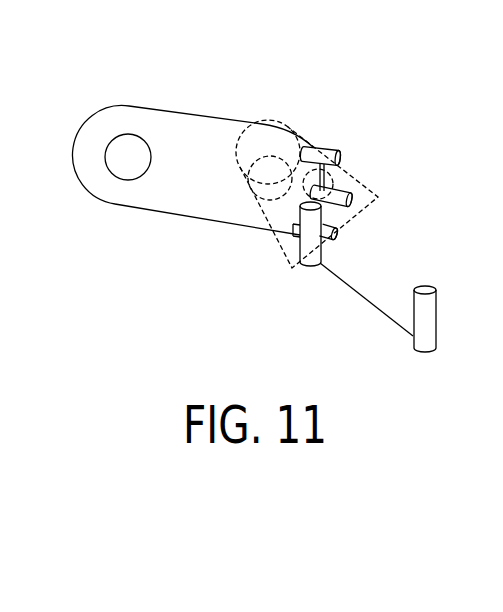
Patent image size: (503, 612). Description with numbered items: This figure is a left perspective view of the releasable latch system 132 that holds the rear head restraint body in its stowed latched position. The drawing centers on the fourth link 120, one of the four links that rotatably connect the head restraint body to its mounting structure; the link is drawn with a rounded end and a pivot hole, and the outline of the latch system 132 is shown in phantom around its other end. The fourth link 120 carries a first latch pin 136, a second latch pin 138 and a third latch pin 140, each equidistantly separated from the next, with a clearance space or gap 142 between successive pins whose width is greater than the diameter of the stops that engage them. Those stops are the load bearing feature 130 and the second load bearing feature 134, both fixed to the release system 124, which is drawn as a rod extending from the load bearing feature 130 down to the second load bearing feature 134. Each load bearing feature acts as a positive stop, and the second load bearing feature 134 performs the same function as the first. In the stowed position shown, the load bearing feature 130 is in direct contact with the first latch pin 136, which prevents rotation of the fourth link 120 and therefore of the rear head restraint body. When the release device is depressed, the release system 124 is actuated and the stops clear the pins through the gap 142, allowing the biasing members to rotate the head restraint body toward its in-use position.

The fourth link 120 is at (165, 180).
The release system 124 is at (367, 300).
The load bearing feature 130 is at (302, 248).
The releasable latch system 132 is at (315, 122).
The second load bearing feature 134 is at (428, 317).
The first latch pin 136 is at (339, 234).
The second latch pin 138 is at (353, 200).
The third latch pin 140 is at (345, 163).
The gap 142 is at (343, 182).